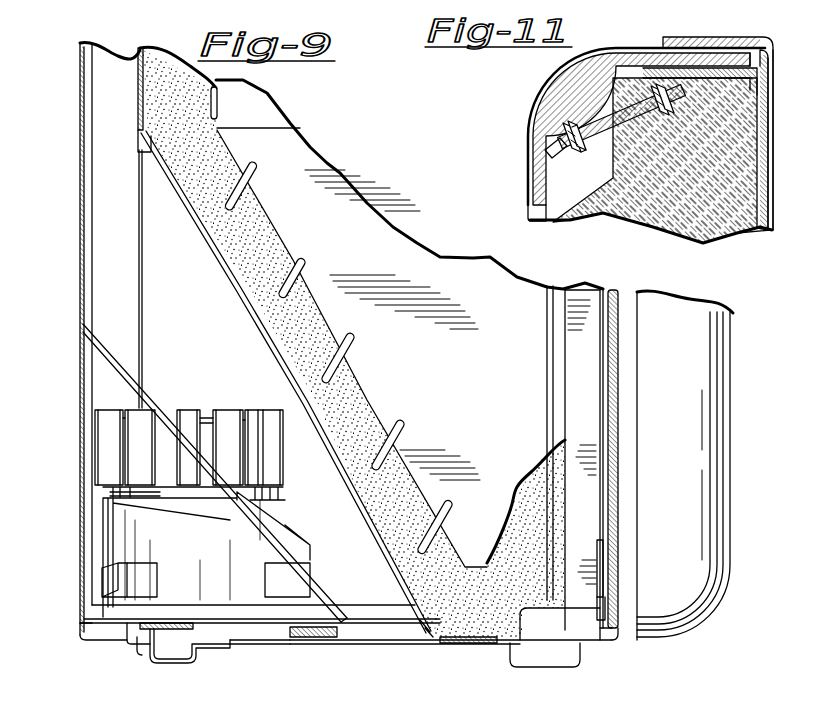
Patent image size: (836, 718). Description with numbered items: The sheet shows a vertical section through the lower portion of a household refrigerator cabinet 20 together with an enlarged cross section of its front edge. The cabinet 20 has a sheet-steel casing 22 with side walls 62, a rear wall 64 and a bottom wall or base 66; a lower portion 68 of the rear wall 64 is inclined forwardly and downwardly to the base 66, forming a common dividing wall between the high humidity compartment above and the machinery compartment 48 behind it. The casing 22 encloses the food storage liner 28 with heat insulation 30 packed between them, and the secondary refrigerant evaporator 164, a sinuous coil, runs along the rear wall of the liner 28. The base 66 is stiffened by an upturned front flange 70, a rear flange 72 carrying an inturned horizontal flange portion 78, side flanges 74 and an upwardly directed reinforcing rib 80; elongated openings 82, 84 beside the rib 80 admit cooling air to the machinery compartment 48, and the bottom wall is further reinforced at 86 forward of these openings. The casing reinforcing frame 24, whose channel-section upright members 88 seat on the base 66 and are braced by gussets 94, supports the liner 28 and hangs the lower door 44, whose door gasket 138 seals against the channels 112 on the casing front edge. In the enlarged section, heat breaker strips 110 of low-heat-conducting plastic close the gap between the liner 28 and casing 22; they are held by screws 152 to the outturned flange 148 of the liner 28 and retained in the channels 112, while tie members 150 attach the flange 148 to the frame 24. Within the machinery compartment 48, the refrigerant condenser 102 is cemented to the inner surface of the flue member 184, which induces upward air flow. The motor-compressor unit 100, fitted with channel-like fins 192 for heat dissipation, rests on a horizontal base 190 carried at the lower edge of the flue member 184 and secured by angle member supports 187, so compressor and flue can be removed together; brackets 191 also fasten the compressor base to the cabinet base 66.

In FIG. 9, the flue member 184 is at (88, 339).
In FIG. 9, the refrigerant condenser 102 is at (87, 156).
In FIG. 9, the rear wall 64 is at (138, 73).
In FIG. 9, the heat insulation 30 is at (265, 321).
In FIG. 11, the heat insulation 30 is at (760, 232).
In FIG. 9, the refrigerant evaporator 164 is at (218, 100).
In FIG. 9, the liner 28 is at (298, 153).
In FIG. 11, the liner 28 is at (523, 208).
In FIG. 9, the lower portion of casing rear wall 68 is at (216, 258).
In FIG. 9, the angle member supports 187 is at (110, 345).
In FIG. 9, the channel-like fins 192 is at (283, 464).
In FIG. 9, the motor-compressor unit 100 is at (107, 529).
In FIG. 9, the machinery compartment 48 is at (367, 598).
In FIG. 9, the elongated opening 82 is at (380, 625).
In FIG. 9, the inturned horizontal flange portion 78 is at (173, 622).
In FIG. 9, the rear flange 72 is at (150, 640).
In FIG. 9, the horizontal base 190 is at (103, 614).
In FIG. 9, the brackets 191 is at (137, 638).
In FIG. 9, the elongated opening 84 is at (240, 641).
In FIG. 9, the reinforcing rib 80 is at (313, 641).
In FIG. 9, the bottom wall 66 is at (453, 641).
In FIG. 9, the side flanges 74 is at (550, 633).
In FIG. 9, the reinforcement 86 is at (410, 625).
In FIG. 9, the cabinet 20 is at (610, 641).
In FIG. 9, the casing 22 is at (608, 381).
In FIG. 11, the casing 22 is at (773, 115).
In FIG. 9, the casing reinforcing frame 24 is at (588, 419).
In FIG. 11, the casing reinforcing frame 24 is at (796, 98).
In FIG. 9, the door gasket 138 is at (623, 463).
In FIG. 9, the upright members 88 is at (595, 492).
In FIG. 11, the upright members 88 is at (628, 140).
In FIG. 9, the lower door 44 is at (729, 366).
In FIG. 9, the gussets 94 is at (603, 563).
In FIG. 9, the front flange 70 is at (601, 618).
In FIG. 11, the heat breaker strips 110 is at (554, 76).
In FIG. 11, the channels 112 is at (762, 47).
In FIG. 11, the side walls 62 is at (773, 160).
In FIG. 11, the tie members 150 is at (600, 114).
In FIG. 11, the screws 152 is at (562, 131).
In FIG. 11, the outturned flange 148 is at (573, 153).